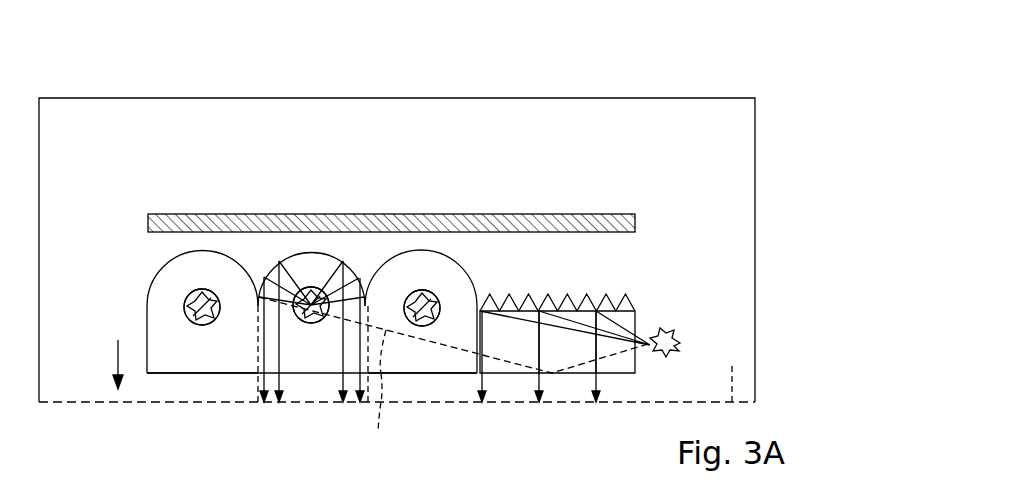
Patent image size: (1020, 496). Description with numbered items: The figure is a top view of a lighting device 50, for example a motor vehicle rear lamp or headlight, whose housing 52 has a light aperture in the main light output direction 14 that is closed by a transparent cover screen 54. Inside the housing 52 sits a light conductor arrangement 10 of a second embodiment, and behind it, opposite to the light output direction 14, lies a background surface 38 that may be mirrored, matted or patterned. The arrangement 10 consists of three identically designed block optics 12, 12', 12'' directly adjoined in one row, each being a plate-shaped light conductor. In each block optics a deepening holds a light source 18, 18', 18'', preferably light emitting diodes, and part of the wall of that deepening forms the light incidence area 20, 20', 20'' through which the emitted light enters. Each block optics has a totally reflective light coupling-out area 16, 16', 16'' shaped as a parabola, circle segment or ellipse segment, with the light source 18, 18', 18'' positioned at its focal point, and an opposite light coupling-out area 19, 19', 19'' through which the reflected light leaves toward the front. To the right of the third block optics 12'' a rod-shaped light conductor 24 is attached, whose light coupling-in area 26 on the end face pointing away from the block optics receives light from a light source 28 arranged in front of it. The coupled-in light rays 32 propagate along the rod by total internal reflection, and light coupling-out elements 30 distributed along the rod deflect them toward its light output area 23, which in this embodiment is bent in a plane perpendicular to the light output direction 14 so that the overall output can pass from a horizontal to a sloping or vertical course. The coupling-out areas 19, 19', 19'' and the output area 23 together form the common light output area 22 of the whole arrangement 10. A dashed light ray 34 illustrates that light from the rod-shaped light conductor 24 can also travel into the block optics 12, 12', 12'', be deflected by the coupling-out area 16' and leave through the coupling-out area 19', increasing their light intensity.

The light conductor arrangement 10 is at (636, 275).
The block optics 12 is at (219, 354).
The middle block optics 12' is at (329, 354).
The block optics facing the light conductor 12'' is at (405, 351).
The light output direction 14 is at (118, 352).
The light coupling-out area 16 is at (280, 307).
The light coupling-out area of the middle block optics 16' is at (311, 239).
The light coupling-out area of the third block optics 16'' is at (421, 273).
The light source 18 is at (200, 249).
The light source of the middle block optics 18' is at (309, 248).
The light source of the third block optics 18'' is at (415, 249).
The light coupling-out area 19 is at (202, 415).
The light coupling-out area of the middle block optics 19' is at (311, 359).
The light coupling-out area of the third block optics 19'' is at (422, 415).
The light incidence area 20 is at (152, 304).
The light incidence area of the middle block optics 20' is at (291, 248).
The light incidence area of the third block optics 20'' is at (461, 249).
The light output area 22 is at (617, 373).
The light output area of the rod-shaped light conductor 23 is at (557, 373).
The rod-shaped light conductor 24 is at (637, 366).
The light coupling-in area 26 is at (637, 324).
The light source 28 is at (681, 343).
The light coupling-out elements 30 is at (553, 276).
The light rays 32 is at (556, 323).
The light ray 34 is at (375, 415).
The background surface 38 is at (530, 222).
The lighting device 50 is at (653, 77).
The housing 52 is at (568, 98).
The cover screen 54 is at (735, 371).